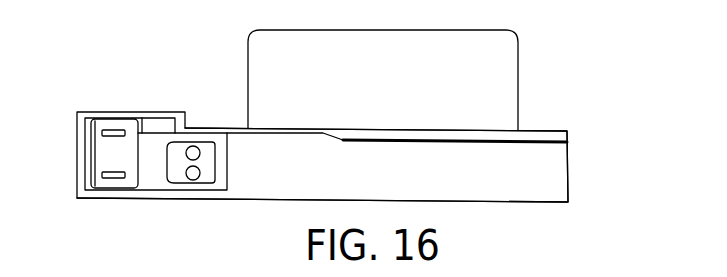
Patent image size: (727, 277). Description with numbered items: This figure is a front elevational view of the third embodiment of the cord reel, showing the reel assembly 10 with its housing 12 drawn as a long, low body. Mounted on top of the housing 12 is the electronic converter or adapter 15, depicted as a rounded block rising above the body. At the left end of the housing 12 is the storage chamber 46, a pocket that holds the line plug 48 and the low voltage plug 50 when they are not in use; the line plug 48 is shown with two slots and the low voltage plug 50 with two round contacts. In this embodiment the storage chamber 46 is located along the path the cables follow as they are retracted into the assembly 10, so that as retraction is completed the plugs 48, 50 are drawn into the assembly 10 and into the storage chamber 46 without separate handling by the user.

The assembly 10 is at (538, 209).
The housing 12 is at (547, 163).
The electronic converter or adapter 15 is at (430, 58).
The storage chamber 46 is at (150, 167).
The line plug 48 is at (100, 160).
The low voltage plug 50 is at (173, 175).